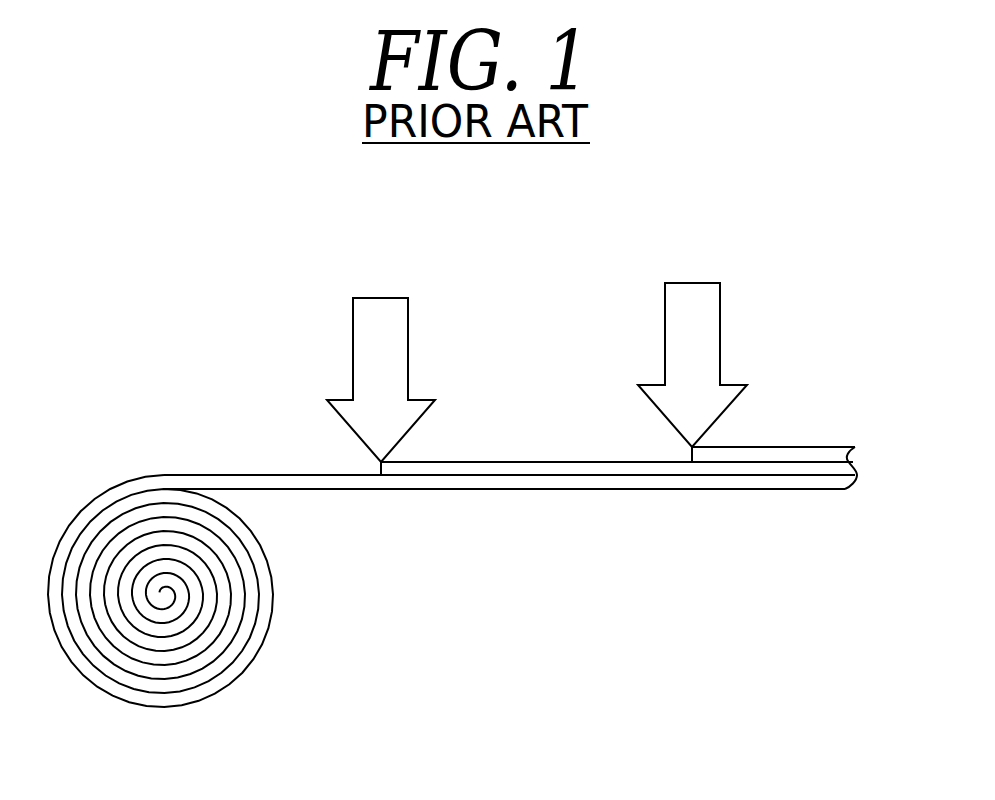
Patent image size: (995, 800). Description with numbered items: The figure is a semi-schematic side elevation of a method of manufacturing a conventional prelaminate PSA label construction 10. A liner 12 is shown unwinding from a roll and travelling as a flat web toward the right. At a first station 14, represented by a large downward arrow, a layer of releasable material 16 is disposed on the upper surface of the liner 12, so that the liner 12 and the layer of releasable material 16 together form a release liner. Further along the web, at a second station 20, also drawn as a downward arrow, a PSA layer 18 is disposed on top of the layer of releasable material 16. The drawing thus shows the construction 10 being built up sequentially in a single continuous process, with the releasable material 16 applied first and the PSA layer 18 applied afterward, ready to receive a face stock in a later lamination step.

The prelaminate PSA label construction 10 is at (772, 532).
The liner 12 is at (247, 486).
The station 14 is at (388, 342).
The layer of releasable material 16 is at (568, 460).
The PSA layer 18 is at (750, 453).
The station 20 is at (707, 338).